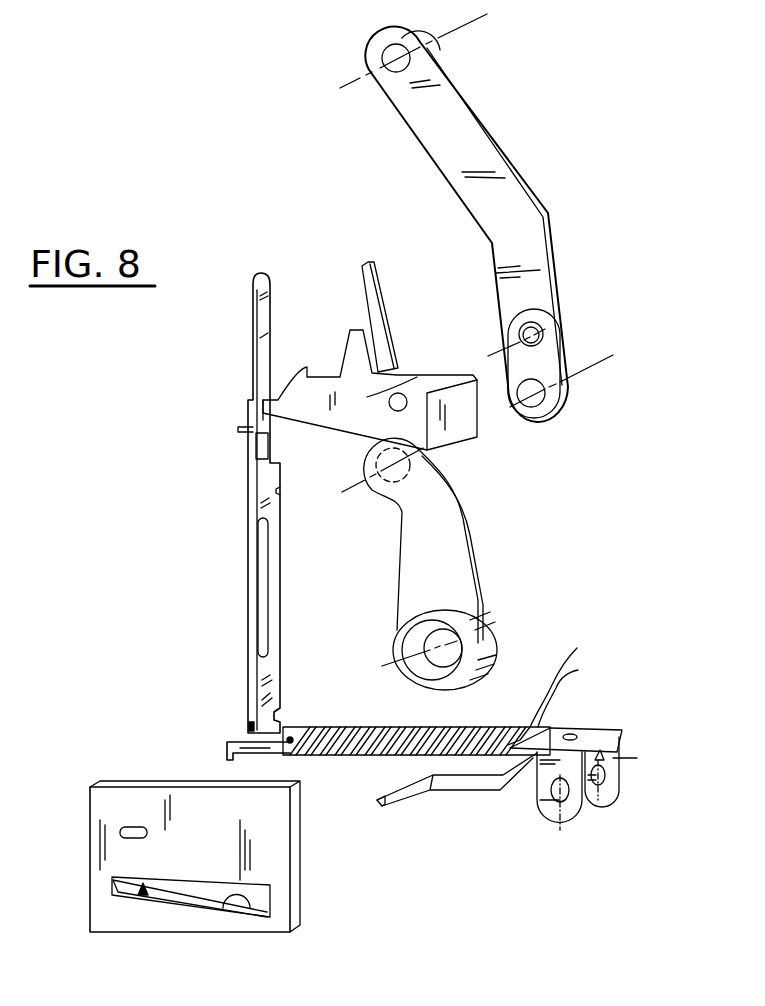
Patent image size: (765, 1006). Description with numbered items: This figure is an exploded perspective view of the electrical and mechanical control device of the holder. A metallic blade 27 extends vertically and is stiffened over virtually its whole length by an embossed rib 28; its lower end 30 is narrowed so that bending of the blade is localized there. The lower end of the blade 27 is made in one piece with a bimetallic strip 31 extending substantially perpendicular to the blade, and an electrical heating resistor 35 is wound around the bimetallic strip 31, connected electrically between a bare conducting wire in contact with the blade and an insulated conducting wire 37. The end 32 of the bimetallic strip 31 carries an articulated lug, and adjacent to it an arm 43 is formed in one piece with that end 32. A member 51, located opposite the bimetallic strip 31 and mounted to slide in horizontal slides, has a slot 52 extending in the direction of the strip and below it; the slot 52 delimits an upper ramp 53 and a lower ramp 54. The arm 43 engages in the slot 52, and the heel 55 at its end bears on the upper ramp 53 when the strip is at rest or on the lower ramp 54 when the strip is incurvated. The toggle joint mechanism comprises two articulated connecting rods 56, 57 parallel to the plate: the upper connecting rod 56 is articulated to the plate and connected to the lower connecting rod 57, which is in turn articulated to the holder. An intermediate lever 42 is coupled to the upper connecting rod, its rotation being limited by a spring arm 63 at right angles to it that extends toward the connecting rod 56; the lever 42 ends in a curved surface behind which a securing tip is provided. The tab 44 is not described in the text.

The upper connecting rod 56 is at (520, 204).
The spring arm 63 is at (377, 298).
The intermediate lever 42 is at (393, 367).
The tab 44 is at (253, 453).
The embossed rib 28 is at (264, 567).
The metallic blade 27 is at (258, 694).
The lower end 30 is at (249, 727).
The bimetallic strip 31 is at (280, 754).
The electrical heating resistor 35 is at (390, 727).
The arm 43 is at (478, 781).
The heel 55 is at (394, 809).
The insulated conducting wire 37 is at (557, 681).
The end of the bimetallic strip 32 is at (597, 728).
The lower connecting rod 57 is at (447, 556).
The member 51 is at (223, 918).
The slot 52 is at (178, 892).
The upper ramp 53 is at (143, 897).
The lower ramp 54 is at (255, 908).